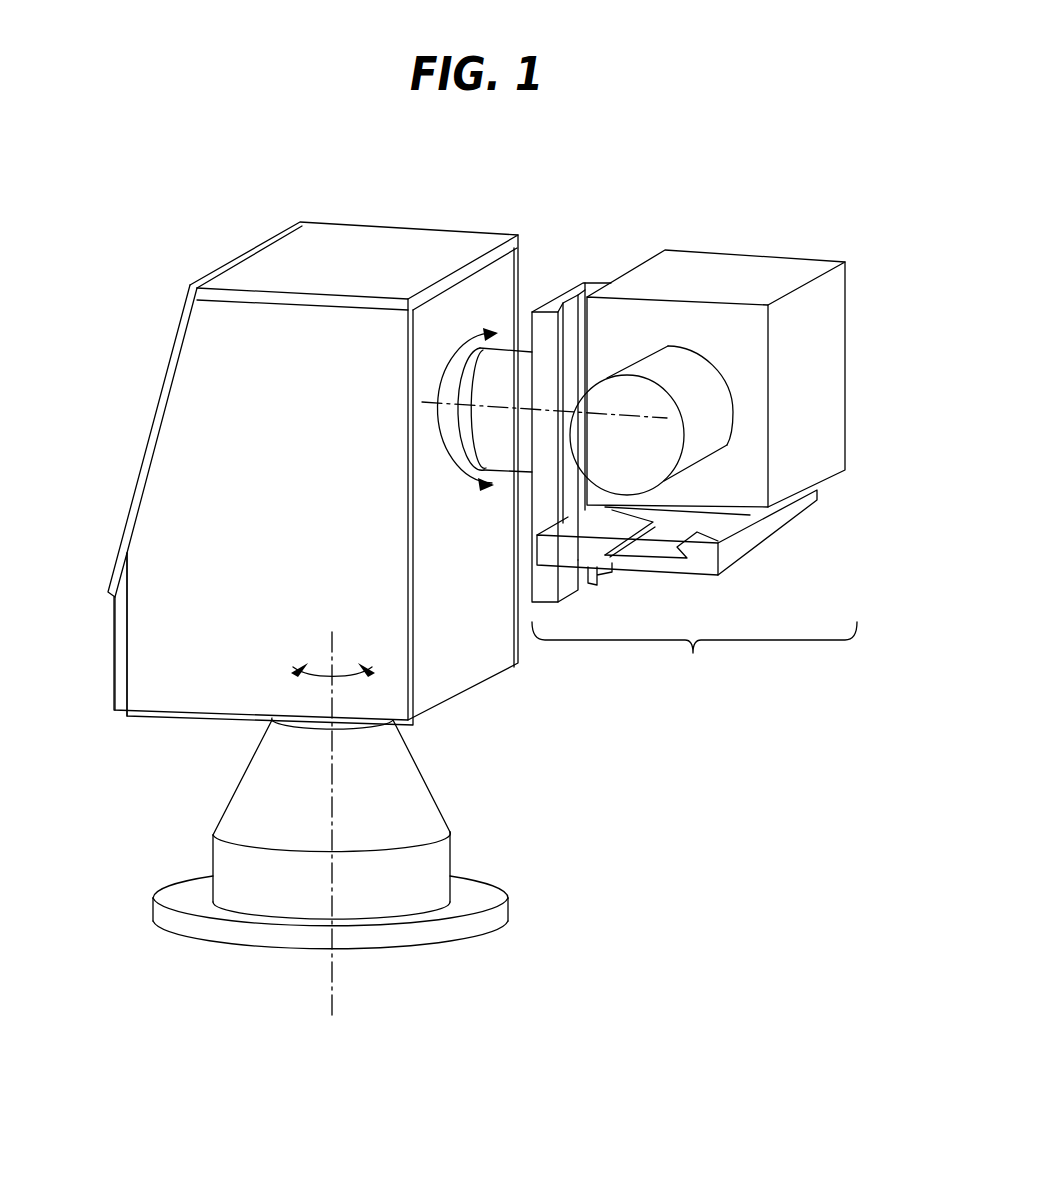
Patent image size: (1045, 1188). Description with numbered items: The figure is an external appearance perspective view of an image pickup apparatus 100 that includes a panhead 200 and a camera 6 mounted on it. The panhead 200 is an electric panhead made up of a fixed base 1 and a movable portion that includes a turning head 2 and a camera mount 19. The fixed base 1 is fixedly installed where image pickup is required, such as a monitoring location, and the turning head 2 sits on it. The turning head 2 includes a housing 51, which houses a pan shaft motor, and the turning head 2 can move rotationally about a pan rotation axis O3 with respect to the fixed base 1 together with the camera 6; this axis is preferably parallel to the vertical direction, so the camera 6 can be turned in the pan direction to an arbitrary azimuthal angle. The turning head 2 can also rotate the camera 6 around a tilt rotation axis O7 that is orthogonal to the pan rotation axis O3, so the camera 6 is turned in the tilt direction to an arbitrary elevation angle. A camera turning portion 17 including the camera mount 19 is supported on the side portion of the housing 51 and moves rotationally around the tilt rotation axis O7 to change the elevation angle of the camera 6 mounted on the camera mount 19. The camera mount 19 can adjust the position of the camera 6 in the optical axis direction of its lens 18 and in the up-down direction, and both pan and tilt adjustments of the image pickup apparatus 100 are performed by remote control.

The image pickup apparatus 100 is at (852, 206).
The panhead 200 is at (112, 420).
The turning head 2 is at (247, 490).
The housing 51 is at (143, 655).
The fixed base 1 is at (250, 822).
The pan rotation axis O3 is at (327, 810).
The tilt rotation axis O7 is at (628, 413).
The lens 18 is at (710, 423).
The camera 6 is at (713, 471).
The camera turning portion 17 is at (694, 487).
The camera mount 19 is at (705, 557).